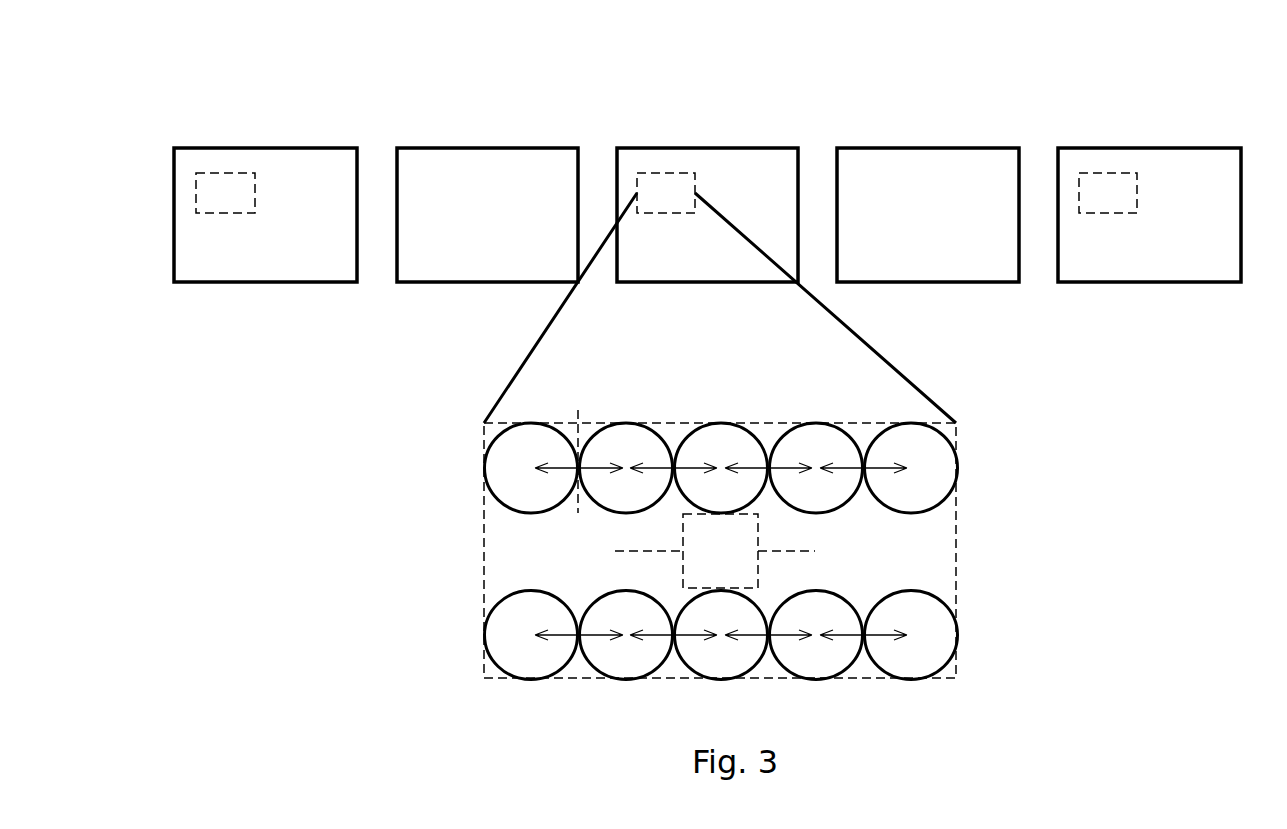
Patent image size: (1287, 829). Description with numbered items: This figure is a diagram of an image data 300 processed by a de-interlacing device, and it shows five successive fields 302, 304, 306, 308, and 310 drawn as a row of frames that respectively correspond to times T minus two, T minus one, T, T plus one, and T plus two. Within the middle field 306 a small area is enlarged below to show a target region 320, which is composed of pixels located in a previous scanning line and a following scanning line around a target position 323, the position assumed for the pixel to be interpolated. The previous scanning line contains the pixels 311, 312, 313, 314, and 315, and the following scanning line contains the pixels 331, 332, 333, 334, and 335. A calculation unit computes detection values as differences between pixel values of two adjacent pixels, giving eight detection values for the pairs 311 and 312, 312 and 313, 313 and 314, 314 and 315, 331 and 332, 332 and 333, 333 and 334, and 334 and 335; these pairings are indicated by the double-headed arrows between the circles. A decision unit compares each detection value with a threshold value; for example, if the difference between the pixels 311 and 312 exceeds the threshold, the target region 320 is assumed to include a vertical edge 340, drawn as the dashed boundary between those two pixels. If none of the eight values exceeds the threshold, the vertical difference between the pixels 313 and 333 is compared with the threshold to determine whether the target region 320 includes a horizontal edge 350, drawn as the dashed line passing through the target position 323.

The image data 300 is at (298, 103).
The field 302 is at (266, 147).
The field 304 is at (487, 147).
The field 306 is at (707, 142).
The field 308 is at (928, 147).
The field 310 is at (1148, 147).
The pixel 311 is at (530, 425).
The pixel 312 is at (625, 425).
The pixel 313 is at (720, 425).
The pixel 314 is at (815, 425).
The pixel 315 is at (900, 425).
The target region 320 is at (956, 551).
The target position 323 is at (705, 563).
The pixel 331 is at (530, 671).
The pixel 332 is at (625, 671).
The pixel 333 is at (720, 671).
The pixel 334 is at (815, 671).
The pixel 335 is at (903, 671).
The vertical edge 340 is at (576, 495).
The horizontal edge 350 is at (815, 551).